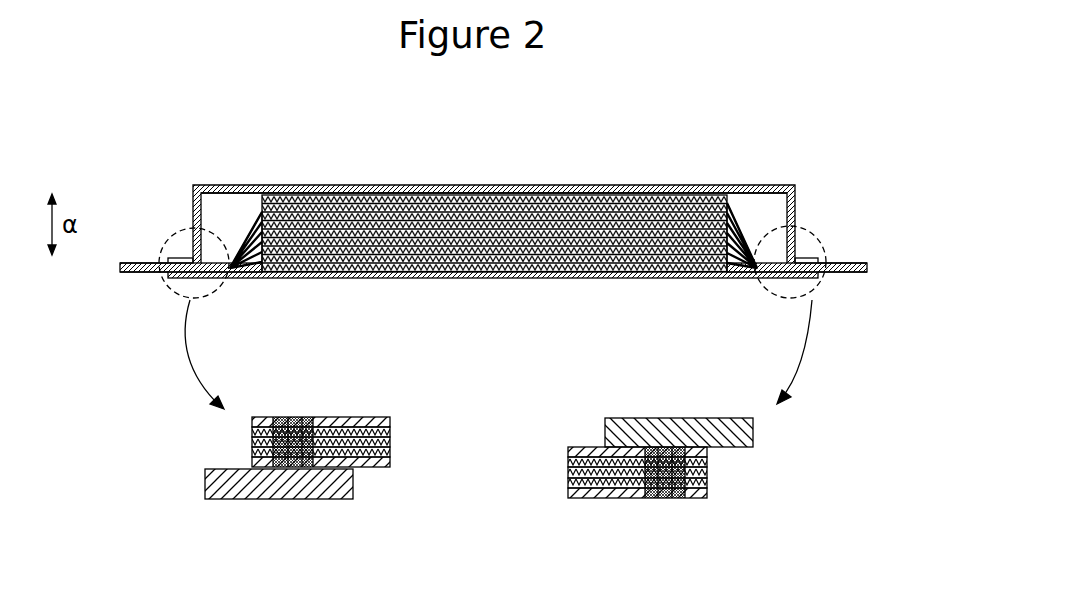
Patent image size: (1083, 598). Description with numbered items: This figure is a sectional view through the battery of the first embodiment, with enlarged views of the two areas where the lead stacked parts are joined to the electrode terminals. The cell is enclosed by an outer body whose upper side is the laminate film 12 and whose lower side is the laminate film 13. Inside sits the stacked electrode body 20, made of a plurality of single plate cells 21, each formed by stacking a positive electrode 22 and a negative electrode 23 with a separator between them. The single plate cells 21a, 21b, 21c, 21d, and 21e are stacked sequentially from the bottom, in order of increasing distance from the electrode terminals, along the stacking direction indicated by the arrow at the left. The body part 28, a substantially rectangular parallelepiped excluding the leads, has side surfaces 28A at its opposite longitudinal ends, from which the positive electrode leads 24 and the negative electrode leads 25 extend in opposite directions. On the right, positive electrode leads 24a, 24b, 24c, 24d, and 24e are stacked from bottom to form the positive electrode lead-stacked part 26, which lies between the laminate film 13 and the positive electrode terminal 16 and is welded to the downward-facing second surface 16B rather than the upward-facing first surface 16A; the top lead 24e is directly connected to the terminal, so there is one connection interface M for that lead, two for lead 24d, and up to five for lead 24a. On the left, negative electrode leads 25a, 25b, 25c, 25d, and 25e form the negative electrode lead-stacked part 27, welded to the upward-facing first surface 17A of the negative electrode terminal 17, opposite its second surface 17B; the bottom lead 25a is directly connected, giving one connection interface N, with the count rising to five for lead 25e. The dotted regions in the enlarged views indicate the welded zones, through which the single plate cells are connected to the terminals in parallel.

The laminate film 12 is at (742, 188).
The laminate film 13 is at (503, 279).
The positive electrode terminal 16 is at (828, 274).
The first surface 16A is at (860, 263).
The second surface 16B is at (865, 273).
The negative electrode terminal 17 is at (166, 279).
The first surface 17A is at (122, 263).
The second surface 17B is at (124, 274).
The stacked electrode body 20 is at (756, 224).
The single plate cell 21 is at (494, 177).
The single plate cell 21a is at (655, 255).
The single plate cell 21b is at (612, 243).
The single plate cell 21c is at (570, 232).
The single plate cell 21d is at (530, 218).
The single plate cell 21e is at (485, 205).
The positive electrode 22 is at (372, 198).
The negative electrode 23 is at (412, 210).
The positive electrode lead 24 is at (758, 262).
The positive electrode lead 24a is at (580, 497).
The positive electrode lead 24b is at (710, 483).
The positive electrode lead 24c is at (710, 472).
The positive electrode lead 24d is at (710, 462).
The positive electrode lead 24e is at (578, 447).
The negative electrode lead 25 is at (236, 258).
The negative electrode lead 25a is at (378, 468).
The negative electrode lead 25b is at (252, 450).
The negative electrode lead 25c is at (252, 441).
The negative electrode lead 25d is at (252, 430).
The negative electrode lead 25e is at (378, 418).
The positive electrode lead-stacked part 26 is at (639, 459).
The negative electrode lead-stacked part 27 is at (322, 447).
The body part 28 is at (305, 188).
The side surface 28A is at (262, 213).
The connection interface N is at (273, 440).
The connection interface M is at (647, 460).